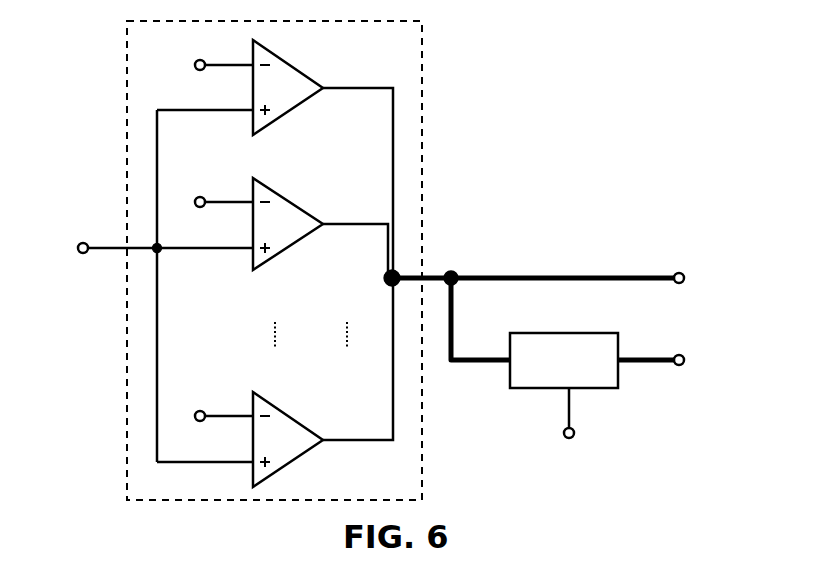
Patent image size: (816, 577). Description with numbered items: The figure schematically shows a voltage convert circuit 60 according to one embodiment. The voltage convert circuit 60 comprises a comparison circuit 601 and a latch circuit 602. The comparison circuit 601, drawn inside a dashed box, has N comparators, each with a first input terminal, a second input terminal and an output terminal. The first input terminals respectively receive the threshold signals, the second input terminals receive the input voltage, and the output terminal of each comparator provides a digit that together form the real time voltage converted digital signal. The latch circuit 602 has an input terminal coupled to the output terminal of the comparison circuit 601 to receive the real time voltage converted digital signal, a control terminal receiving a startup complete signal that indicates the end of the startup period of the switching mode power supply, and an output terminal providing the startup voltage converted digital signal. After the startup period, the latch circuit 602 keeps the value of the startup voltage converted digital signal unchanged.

The voltage convert circuit 60 is at (623, 70).
The comparison circuit 601 is at (422, 163).
The latch circuit 602 is at (623, 392).